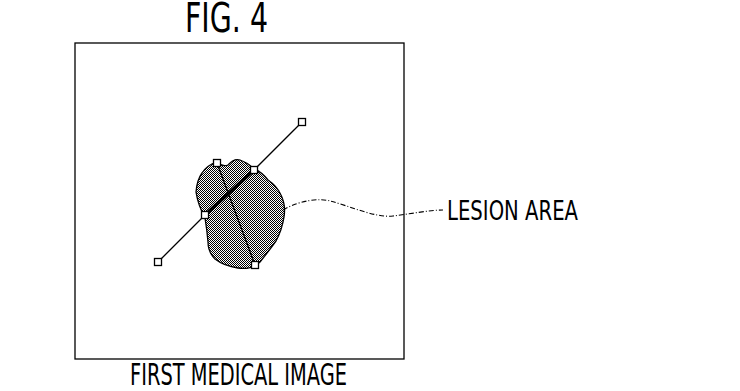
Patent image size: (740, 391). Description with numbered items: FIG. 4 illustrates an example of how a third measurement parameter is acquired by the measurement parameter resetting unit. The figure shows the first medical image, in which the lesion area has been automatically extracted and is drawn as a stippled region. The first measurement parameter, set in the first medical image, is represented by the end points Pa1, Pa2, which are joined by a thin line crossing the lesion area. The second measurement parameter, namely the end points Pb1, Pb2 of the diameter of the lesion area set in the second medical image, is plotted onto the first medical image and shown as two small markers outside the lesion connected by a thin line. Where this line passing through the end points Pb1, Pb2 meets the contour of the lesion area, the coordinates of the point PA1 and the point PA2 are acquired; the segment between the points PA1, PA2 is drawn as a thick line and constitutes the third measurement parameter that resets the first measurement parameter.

The end point Pa1 is at (226, 196).
The end point Pa2 is at (266, 282).
The point PA1 is at (280, 170).
The point PA2 is at (180, 210).
The end point Pb1 is at (293, 126).
The end point Pb2 is at (164, 258).